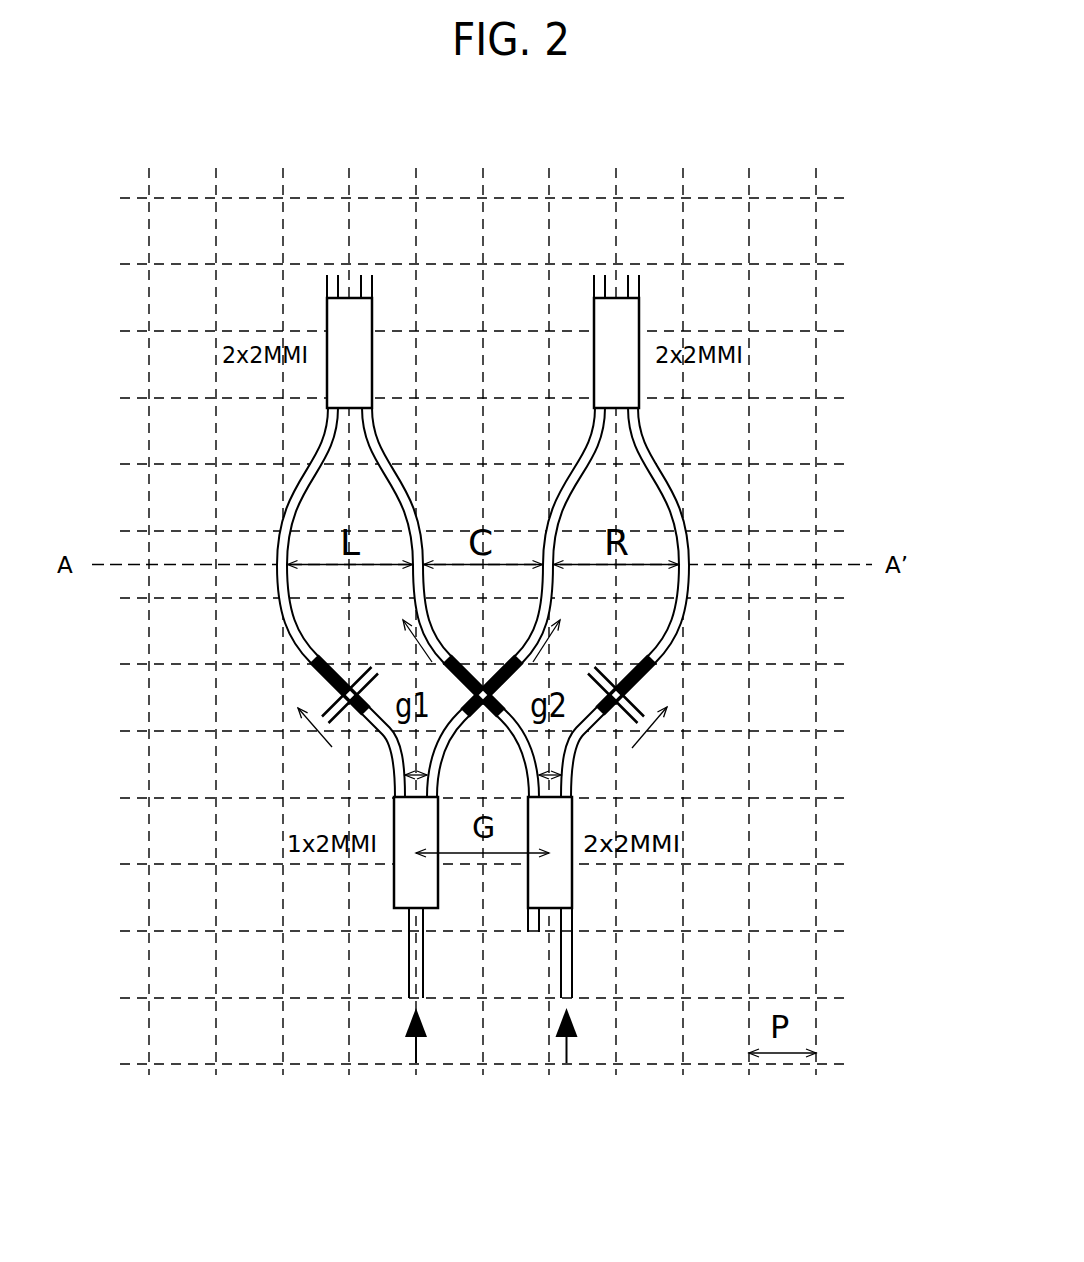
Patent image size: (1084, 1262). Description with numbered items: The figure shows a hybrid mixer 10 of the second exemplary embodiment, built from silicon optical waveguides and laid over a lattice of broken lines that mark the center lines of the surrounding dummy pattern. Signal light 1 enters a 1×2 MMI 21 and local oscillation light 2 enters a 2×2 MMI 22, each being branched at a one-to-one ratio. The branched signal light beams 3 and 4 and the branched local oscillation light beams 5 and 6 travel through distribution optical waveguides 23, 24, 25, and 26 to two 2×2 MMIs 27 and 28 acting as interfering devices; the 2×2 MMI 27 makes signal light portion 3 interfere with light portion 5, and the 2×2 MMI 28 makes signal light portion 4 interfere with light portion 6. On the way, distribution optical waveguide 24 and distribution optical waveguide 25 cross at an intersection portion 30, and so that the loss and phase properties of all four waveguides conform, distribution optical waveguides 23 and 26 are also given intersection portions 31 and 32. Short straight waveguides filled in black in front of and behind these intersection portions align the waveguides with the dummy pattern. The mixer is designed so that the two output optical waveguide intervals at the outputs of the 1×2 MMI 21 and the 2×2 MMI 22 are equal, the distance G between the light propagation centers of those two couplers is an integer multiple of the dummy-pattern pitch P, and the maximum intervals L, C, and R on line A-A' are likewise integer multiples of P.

The signal light 1 is at (347, 1062).
The local oscillation light 2 is at (718, 1062).
The branched signal light beam 3 is at (315, 738).
The branched signal light beam 4 is at (557, 641).
The branched local oscillation light beam 5 is at (409, 641).
The branched local oscillation light beam 6 is at (650, 738).
The hybrid mixer 10 is at (732, 120).
The 1×2 MMI 21 is at (393, 899).
The 2×2 MMI 22 is at (573, 899).
The distribution optical waveguide 23 is at (300, 487).
The distribution optical waveguide 24 is at (560, 490).
The distribution optical waveguide 25 is at (400, 488).
The distribution optical waveguide 26 is at (670, 490).
The 2×2 MMI 27 is at (372, 318).
The 2×2 MMI 28 is at (594, 318).
The intersection portion 30 is at (479, 680).
The intersection portion 31 is at (330, 697).
The intersection portion 32 is at (632, 702).